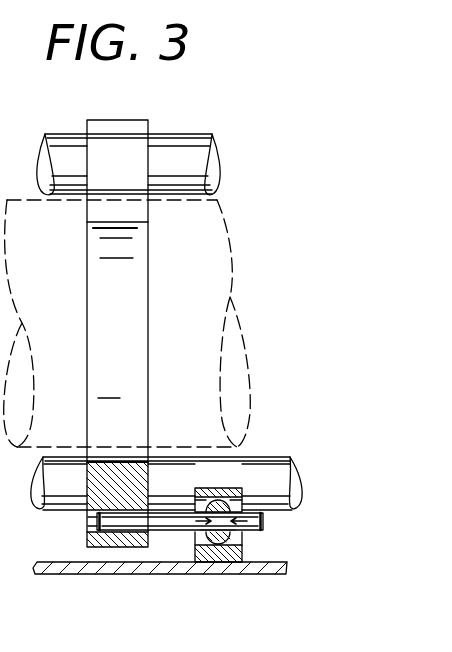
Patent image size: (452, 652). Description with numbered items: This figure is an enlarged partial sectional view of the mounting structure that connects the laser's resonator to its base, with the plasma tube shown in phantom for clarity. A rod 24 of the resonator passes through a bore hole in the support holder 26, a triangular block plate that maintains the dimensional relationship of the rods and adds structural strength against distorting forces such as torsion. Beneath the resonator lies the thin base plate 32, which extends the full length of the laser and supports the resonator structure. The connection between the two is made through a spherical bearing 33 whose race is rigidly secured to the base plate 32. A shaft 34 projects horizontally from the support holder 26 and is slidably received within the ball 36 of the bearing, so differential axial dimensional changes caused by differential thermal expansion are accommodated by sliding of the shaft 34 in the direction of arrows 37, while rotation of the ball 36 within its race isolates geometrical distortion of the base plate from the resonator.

The rod 24 is at (164, 158).
The support holder 26 is at (140, 305).
The base plate 32 is at (232, 568).
The spherical bearing 33 is at (220, 492).
The shaft 34 is at (178, 522).
The ball 36 is at (243, 500).
The arrows 37 is at (200, 530).